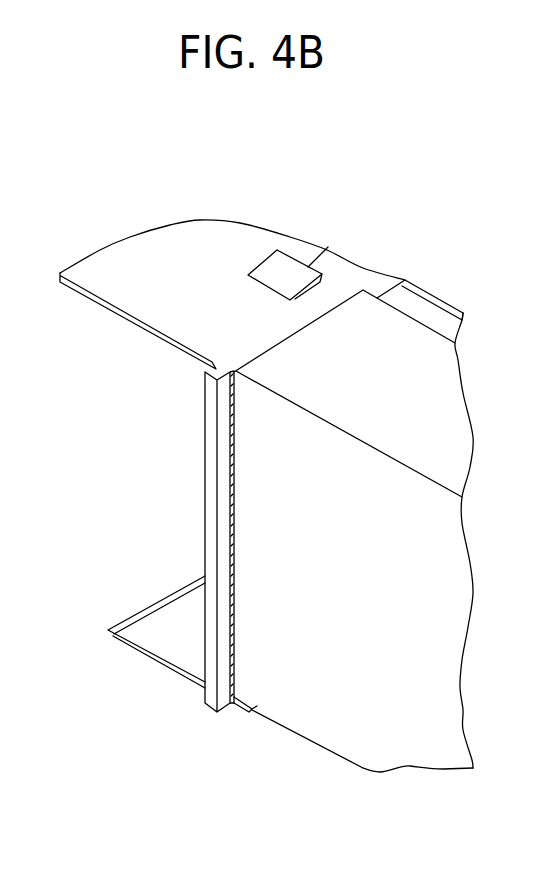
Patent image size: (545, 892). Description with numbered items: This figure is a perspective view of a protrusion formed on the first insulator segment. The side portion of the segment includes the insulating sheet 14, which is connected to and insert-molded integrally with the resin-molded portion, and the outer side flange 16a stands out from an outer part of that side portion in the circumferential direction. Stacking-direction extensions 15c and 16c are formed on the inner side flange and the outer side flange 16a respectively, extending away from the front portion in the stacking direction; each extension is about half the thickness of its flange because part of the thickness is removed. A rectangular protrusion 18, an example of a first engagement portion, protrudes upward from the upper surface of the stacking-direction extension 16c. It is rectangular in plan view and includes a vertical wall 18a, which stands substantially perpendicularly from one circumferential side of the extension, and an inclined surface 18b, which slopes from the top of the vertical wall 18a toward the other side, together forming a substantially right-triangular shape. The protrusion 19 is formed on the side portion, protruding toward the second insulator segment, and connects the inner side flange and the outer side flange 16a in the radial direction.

The insulating sheet 14 is at (328, 718).
The stacking-direction extension 15c is at (157, 635).
The outer side flange 16a is at (440, 312).
The stacking-direction extension 16c is at (190, 247).
The rectangular protrusion 18 is at (360, 150).
The vertical wall 18a is at (328, 247).
The inclined surface 18b is at (273, 270).
The protrusion 19 is at (202, 483).